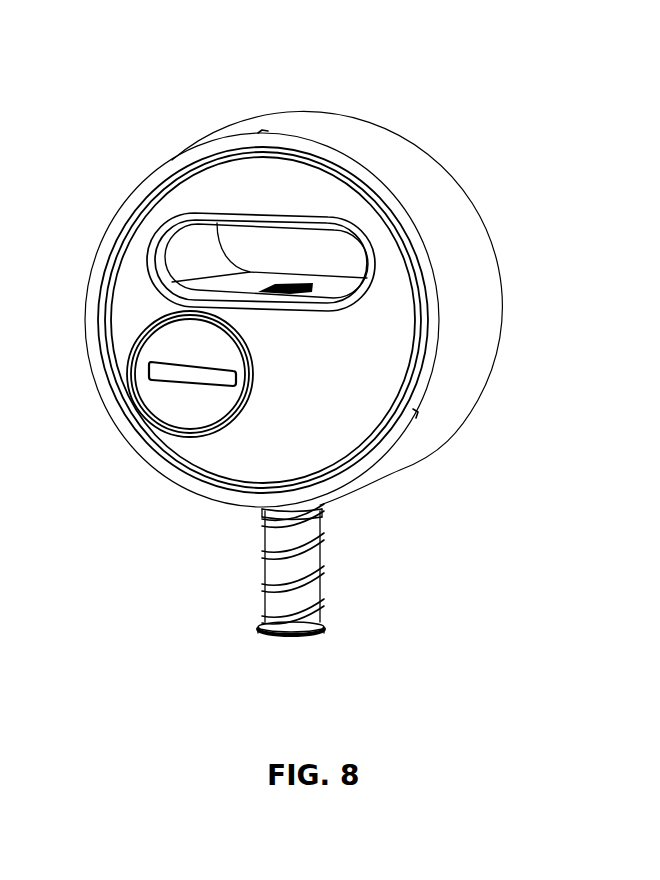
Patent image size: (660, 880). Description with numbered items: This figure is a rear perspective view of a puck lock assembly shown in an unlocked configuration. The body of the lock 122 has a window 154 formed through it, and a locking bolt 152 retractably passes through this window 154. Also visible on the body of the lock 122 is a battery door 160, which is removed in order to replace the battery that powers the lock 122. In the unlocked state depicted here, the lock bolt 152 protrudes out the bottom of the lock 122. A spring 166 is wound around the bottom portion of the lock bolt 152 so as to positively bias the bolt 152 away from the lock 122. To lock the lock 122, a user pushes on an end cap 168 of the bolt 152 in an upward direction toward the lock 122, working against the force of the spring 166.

The lock 122 is at (253, 102).
The window 154 is at (346, 262).
The battery door 160 is at (185, 403).
The locking bolt 152 is at (321, 555).
The spring 166 is at (321, 603).
The end cap 168 is at (298, 637).